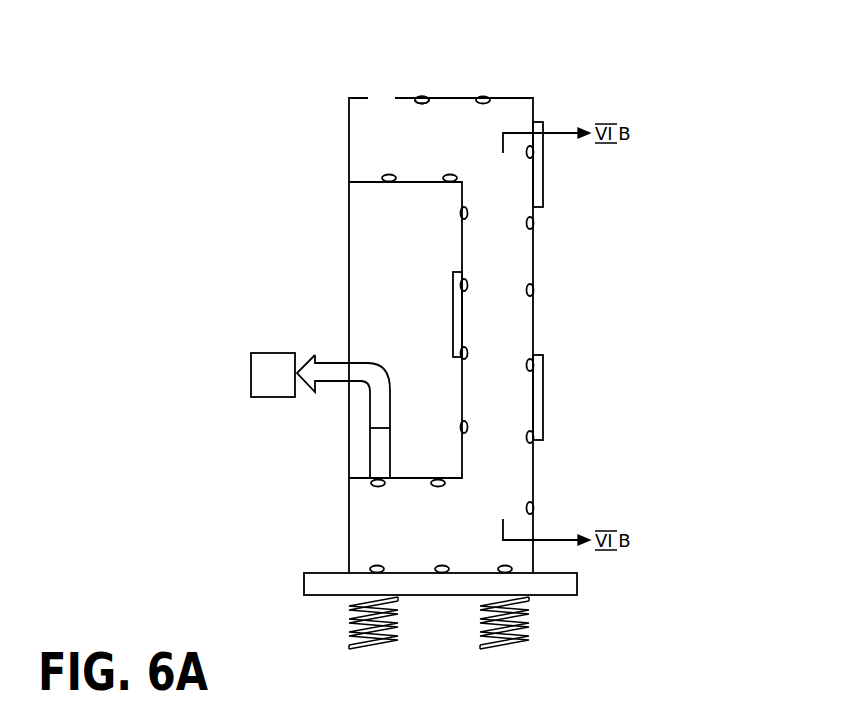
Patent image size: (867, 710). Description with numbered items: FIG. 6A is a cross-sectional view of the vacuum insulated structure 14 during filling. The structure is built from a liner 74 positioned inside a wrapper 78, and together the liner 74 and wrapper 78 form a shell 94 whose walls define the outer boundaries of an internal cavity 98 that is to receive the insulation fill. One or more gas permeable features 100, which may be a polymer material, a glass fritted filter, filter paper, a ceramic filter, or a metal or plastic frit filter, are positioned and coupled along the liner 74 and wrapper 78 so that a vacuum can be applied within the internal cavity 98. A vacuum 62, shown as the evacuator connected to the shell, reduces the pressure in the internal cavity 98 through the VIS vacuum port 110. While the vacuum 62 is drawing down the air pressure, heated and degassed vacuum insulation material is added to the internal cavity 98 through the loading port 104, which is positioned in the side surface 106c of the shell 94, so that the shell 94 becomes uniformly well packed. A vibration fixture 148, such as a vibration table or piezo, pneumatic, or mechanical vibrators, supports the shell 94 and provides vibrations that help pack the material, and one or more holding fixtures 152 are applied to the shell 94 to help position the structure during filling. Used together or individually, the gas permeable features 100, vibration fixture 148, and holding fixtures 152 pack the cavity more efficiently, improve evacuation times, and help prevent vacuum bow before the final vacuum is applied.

The vacuum insulated structure 14 is at (583, 72).
The vacuum 62 is at (251, 365).
The liner 74 is at (407, 182).
The wrapper 78 is at (470, 98).
The shell 94 is at (592, 228).
The internal cavity 98 is at (503, 493).
The gas permeable feature 100 is at (533, 228).
The loading port 104 is at (380, 105).
The side surface 106c is at (437, 98).
The VIS vacuum port 110 is at (378, 444).
The vibration fixture 148 is at (577, 587).
The holding fixture 152 is at (543, 407).